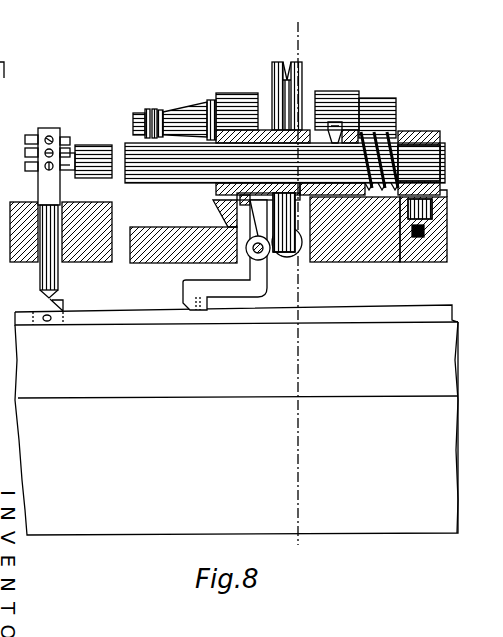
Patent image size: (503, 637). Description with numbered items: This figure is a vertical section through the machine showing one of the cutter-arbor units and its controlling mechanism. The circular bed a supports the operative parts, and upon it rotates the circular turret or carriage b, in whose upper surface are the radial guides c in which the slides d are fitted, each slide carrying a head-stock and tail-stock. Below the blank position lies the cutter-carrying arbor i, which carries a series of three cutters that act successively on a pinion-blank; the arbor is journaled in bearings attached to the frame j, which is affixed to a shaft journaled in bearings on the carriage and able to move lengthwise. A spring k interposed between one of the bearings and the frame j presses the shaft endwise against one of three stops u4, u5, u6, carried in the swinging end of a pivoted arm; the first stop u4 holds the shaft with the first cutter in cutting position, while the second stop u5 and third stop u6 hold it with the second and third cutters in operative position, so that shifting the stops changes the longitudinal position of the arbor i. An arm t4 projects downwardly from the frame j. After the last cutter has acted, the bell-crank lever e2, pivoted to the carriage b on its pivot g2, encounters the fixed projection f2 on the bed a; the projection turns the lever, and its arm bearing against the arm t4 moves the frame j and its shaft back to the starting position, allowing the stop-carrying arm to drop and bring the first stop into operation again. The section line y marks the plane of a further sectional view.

The circular frame or bed a is at (236, 428).
The circular turret or carriage b is at (165, 252).
The radial guides c is at (215, 228).
The slides d is at (236, 315).
The section line y y is at (300, 287).
The first stop u4 is at (70, 141).
The second stop u5 is at (72, 152).
The third stop u6 is at (62, 167).
The cutter-carrying arbor i is at (186, 110).
The frame j is at (302, 145).
The spring k is at (382, 138).
The pivot g2 is at (252, 254).
The bell-crank lever e2 is at (268, 292).
The projection f2 is at (210, 309).
The arm t4 is at (288, 254).